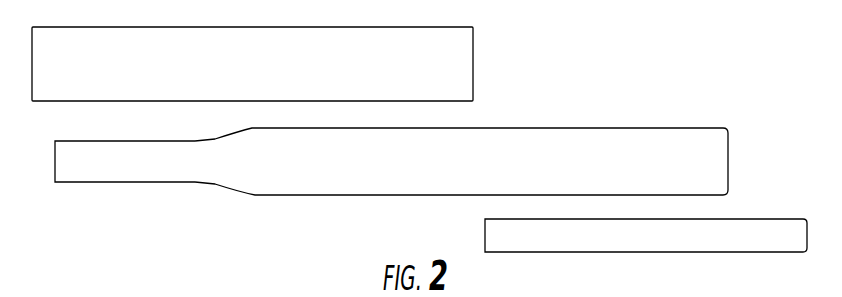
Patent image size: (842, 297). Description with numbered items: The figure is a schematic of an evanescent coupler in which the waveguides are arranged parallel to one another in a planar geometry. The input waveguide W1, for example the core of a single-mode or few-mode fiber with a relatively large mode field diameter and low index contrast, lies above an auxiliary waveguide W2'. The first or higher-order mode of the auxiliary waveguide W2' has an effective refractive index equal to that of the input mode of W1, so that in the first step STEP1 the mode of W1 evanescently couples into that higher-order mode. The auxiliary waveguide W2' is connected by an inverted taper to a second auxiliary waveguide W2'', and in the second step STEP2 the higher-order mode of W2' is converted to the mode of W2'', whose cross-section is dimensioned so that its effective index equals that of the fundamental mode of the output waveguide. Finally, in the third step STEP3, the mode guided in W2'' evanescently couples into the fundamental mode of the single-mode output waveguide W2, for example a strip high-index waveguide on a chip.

The input waveguide W1 is at (267, 64).
The auxiliary waveguide W2' is at (125, 180).
The auxiliary waveguide W2'' is at (461, 177).
The single mode output waveguide W2 is at (661, 235).
The evanescent coupling step STEP1 is at (77, 83).
The mode conversion step STEP2 is at (337, 161).
The evanescent coupling step STEP3 is at (540, 170).